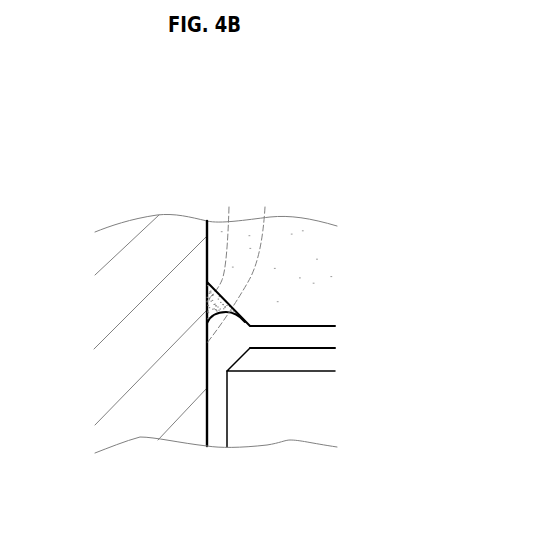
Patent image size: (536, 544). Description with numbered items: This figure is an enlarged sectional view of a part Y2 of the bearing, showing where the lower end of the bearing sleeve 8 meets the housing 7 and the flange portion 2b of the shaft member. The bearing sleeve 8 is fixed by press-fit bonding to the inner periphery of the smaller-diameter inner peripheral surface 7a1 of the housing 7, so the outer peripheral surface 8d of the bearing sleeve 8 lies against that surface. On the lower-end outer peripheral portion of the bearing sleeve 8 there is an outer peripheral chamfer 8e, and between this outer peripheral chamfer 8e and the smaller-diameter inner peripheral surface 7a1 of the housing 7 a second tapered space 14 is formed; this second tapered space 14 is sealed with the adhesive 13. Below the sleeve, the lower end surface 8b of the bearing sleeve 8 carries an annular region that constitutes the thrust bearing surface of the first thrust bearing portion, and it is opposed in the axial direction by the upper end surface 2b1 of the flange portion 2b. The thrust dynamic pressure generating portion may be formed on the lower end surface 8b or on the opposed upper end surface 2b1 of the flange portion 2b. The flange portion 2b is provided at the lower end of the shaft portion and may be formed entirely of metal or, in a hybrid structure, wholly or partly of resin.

The housing 7 is at (148, 295).
The smaller-diameter inner peripheral surface 7a1 is at (206, 387).
The bearing sleeve 8 is at (294, 262).
The lower end surface 8b is at (300, 327).
The outer peripheral surface 8d is at (206, 262).
The outer peripheral chamfer 8e is at (206, 343).
The adhesive 13 is at (243, 265).
The second tapered space 14 is at (225, 244).
The flange portion 2b is at (286, 409).
The upper end surface 2b1 is at (308, 349).
The part Y2 is at (301, 192).